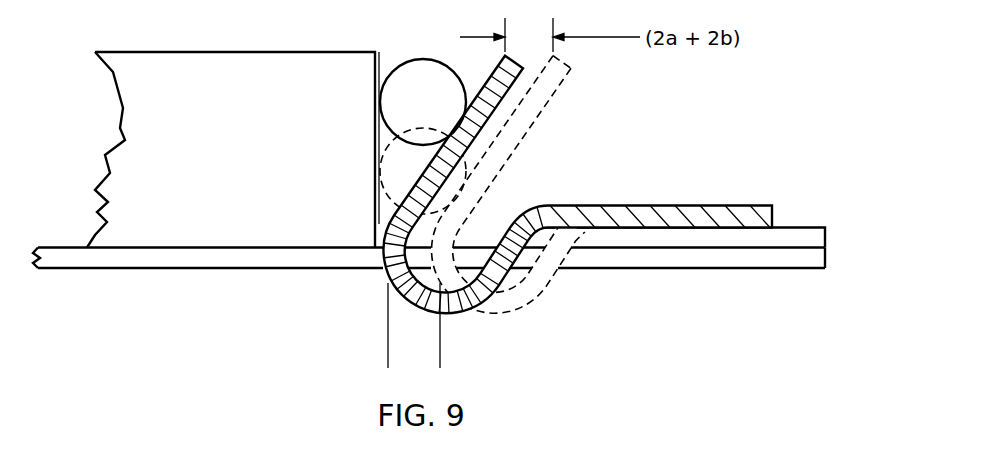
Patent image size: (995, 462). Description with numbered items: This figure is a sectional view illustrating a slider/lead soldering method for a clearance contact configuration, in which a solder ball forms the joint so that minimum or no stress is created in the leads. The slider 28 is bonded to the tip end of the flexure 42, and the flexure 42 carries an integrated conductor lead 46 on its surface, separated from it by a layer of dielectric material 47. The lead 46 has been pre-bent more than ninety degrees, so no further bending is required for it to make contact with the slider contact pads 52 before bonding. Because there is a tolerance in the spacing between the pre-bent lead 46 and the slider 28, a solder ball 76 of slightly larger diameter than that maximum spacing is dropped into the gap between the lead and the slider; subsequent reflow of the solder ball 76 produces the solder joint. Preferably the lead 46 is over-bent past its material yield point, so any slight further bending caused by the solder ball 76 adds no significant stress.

The slider 28 is at (222, 156).
The slider contact pads 52 is at (378, 222).
The solder ball 76 is at (428, 73).
The lead 46 is at (737, 212).
The dielectric material 47 is at (822, 240).
The flexure 42 is at (778, 263).